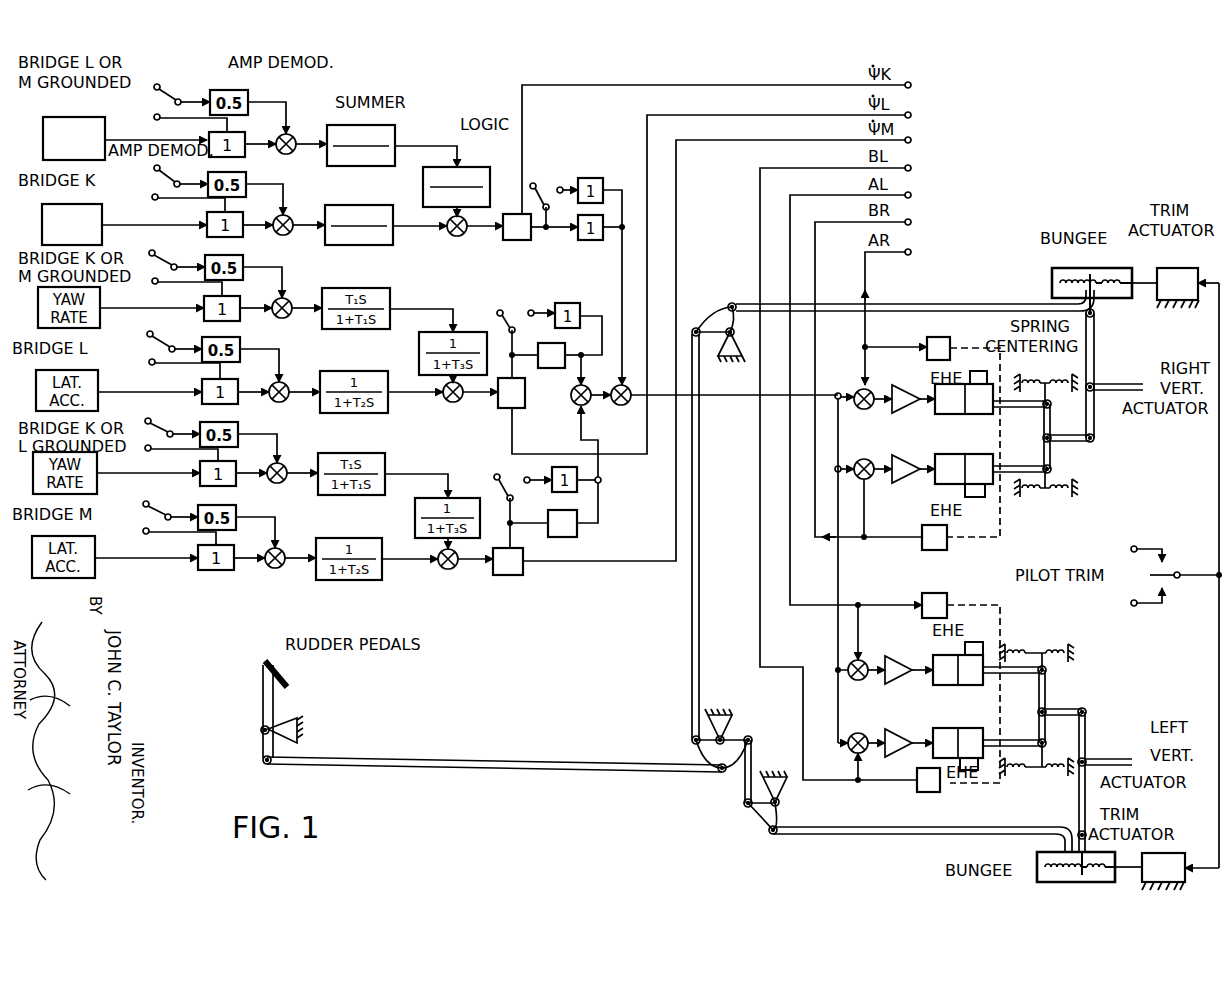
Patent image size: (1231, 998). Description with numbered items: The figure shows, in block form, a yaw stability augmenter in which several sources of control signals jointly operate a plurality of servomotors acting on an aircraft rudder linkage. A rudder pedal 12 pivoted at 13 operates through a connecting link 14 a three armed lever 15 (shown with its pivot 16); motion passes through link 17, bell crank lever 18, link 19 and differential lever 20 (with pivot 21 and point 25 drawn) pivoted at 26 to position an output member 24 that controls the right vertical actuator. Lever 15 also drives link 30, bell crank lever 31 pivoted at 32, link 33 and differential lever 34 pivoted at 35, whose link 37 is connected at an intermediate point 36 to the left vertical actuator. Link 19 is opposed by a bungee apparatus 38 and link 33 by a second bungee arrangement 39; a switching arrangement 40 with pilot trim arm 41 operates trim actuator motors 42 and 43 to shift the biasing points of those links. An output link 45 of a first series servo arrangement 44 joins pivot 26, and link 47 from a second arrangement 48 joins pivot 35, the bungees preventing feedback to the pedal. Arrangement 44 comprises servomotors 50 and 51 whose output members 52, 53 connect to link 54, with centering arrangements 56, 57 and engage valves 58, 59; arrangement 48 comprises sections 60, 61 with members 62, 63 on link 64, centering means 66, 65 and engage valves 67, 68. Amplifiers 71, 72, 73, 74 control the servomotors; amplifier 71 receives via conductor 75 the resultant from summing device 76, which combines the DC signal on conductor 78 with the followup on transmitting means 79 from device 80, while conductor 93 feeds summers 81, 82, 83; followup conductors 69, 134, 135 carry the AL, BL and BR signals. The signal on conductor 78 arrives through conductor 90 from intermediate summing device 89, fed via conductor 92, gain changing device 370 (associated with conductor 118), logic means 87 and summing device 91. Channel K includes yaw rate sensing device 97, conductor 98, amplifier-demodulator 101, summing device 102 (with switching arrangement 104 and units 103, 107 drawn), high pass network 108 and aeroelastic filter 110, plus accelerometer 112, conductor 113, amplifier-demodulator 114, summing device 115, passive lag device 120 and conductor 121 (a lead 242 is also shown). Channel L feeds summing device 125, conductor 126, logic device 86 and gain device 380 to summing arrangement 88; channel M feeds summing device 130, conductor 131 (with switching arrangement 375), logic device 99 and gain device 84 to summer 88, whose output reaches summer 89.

The rudder pedal 12 is at (262, 669).
The pedal pivot 13 is at (260, 734).
The connecting link 14 is at (416, 756).
The three armed lever 15 is at (692, 750).
The bell crank pivot 16 is at (726, 734).
The link 17 is at (686, 688).
The bell crank lever 18 is at (710, 326).
The link 19 is at (964, 308).
The differential lever 20 is at (1095, 342).
The pivot 21 is at (1094, 313).
The output member 24 is at (1116, 384).
The pivot 25 is at (1092, 390).
The pivot 26 is at (1092, 438).
The link 30 is at (740, 780).
The bell crank lever 31 is at (758, 816).
The pivot 32 is at (781, 802).
The link 33 is at (848, 840).
The differential lever 34 is at (1078, 790).
The pivot 35 is at (1084, 712).
The intermediate point 36 is at (1086, 750).
The link 37 is at (1108, 760).
The bungee apparatus 38 is at (1126, 268).
The bungee arrangement 39 is at (1034, 851).
The motor controlled switching arrangement 40 is at (1176, 556).
The pilot trim motor control operable arm 41 is at (1168, 580).
The trim actuator motor 42 is at (1198, 268).
The trim actuator motor 43 is at (1182, 874).
The first series servo arrangement 44 is at (896, 440).
The output link 45 is at (1062, 433).
The link 47 is at (1050, 706).
The second differential servo arrangement 48 is at (898, 713).
The first hydraulic servomotor 50 is at (966, 424).
The second hydraulic servomotor 51 is at (979, 456).
The output member 52 is at (1034, 410).
The output member 53 is at (1035, 466).
The link 54 is at (1051, 469).
The centering arrangement 56 is at (1042, 382).
The spring arrangement 57 is at (1038, 494).
The engage valve 58 is at (982, 364).
The engage valve 59 is at (976, 497).
The fluid type servomotor section 60 is at (934, 692).
The fluid type servomotor section 61 is at (974, 720).
The power output member 62 is at (1026, 676).
The power output member 63 is at (1018, 738).
The link 64 is at (1036, 712).
The centering means 65 is at (1050, 764).
The centering means 66 is at (1032, 650).
The engage valve 67 is at (978, 626).
The engage valve 68 is at (954, 766).
The servo displacement followup conductor 69 is at (862, 606).
The amplifier 71 is at (899, 392).
The amplifier 72 is at (899, 464).
The amplifier 73 is at (898, 654).
The amplifier 74 is at (902, 754).
The conductor 75 is at (876, 396).
The summing device 76 is at (866, 412).
The conductor 78 is at (854, 397).
The transmitting means 79 is at (902, 348).
The signal providing device 80 is at (926, 344).
The summer 81 is at (858, 460).
The summing device 82 is at (854, 678).
The summer 83 is at (850, 738).
The gain device 84 is at (578, 536).
The logic device 86 is at (508, 410).
The logic and magnetic modulator means 87 is at (521, 242).
The summing arrangement 88 is at (574, 402).
The intermediate summing device 89 is at (620, 405).
The conductor 90 is at (748, 398).
The summing device 91 is at (456, 236).
The conductor 92 is at (627, 278).
The conductor 93 is at (828, 622).
The yaw rate sensing device 97 is at (71, 116).
The conductor 98 is at (117, 139).
The logic device 99 is at (516, 575).
The amplifier-demodulator 101 is at (245, 132).
The voltage signal summing device 102 is at (290, 134).
The amplifier demodulator 103 is at (248, 90).
The switching arrangement 104 is at (176, 88).
The lead 107 is at (312, 148).
The high pass network 108 is at (395, 126).
The aeroelastic filter 110 is at (423, 180).
The accelerometer 112 is at (42, 224).
The conductor 113 is at (120, 225).
The amplifier-demodulator 114 is at (206, 233).
The summing device 115 is at (272, 230).
The conductor 118 is at (532, 232).
The passive lag device 120 is at (318, 230).
The conductor 121 is at (418, 232).
The summing device 125 is at (444, 400).
The conductor 126 is at (476, 401).
The summing device 130 is at (440, 568).
The conductor 131 is at (616, 564).
The servo followup conductor 134 is at (888, 782).
The followup conductor 135 is at (894, 534).
The lead 242 is at (490, 234).
The gain changing device 370 is at (569, 162).
The switching arrangement 375 is at (526, 468).
The gain device 380 is at (603, 250).